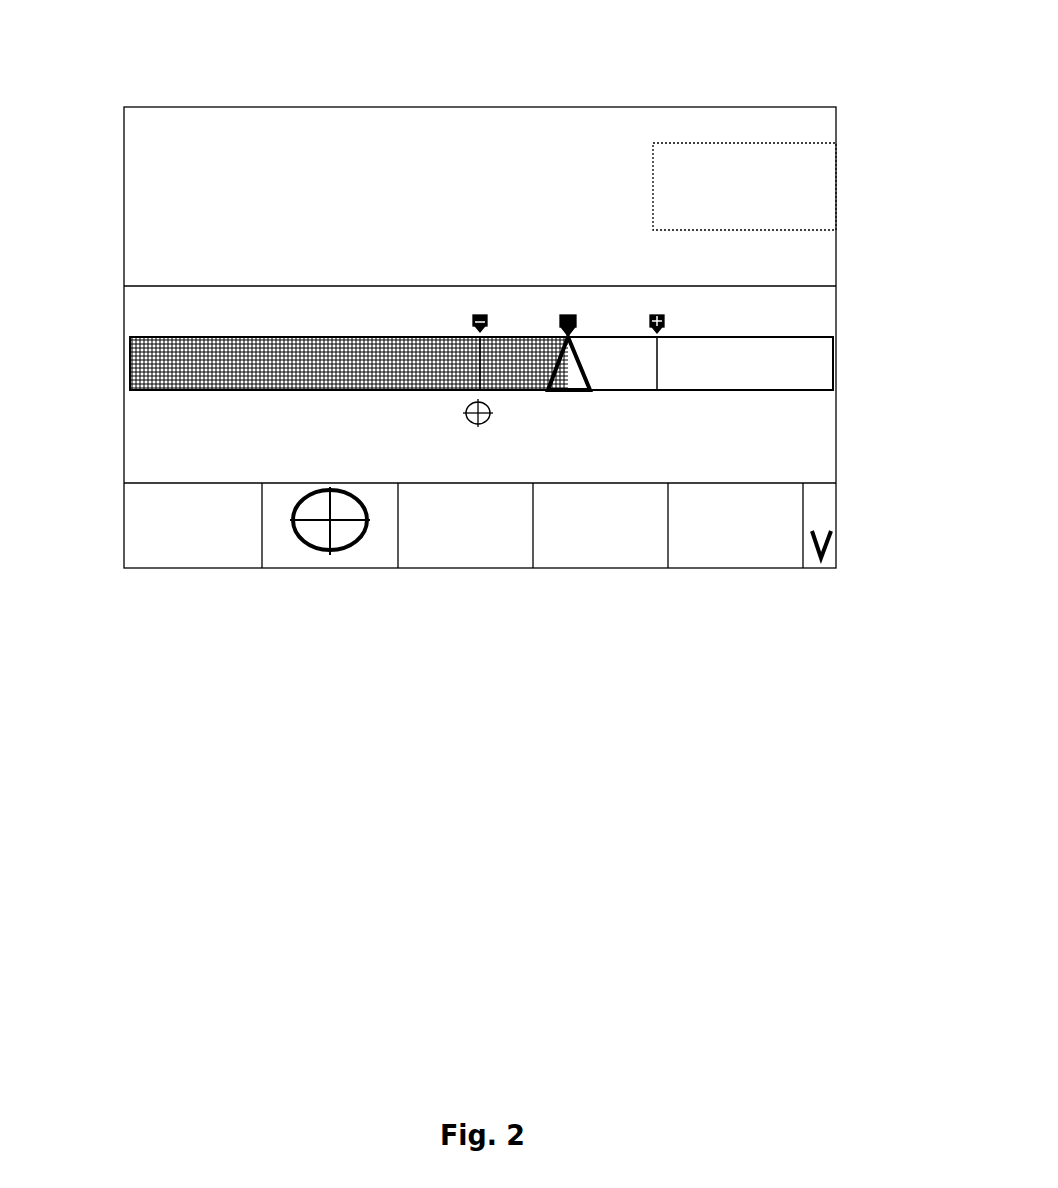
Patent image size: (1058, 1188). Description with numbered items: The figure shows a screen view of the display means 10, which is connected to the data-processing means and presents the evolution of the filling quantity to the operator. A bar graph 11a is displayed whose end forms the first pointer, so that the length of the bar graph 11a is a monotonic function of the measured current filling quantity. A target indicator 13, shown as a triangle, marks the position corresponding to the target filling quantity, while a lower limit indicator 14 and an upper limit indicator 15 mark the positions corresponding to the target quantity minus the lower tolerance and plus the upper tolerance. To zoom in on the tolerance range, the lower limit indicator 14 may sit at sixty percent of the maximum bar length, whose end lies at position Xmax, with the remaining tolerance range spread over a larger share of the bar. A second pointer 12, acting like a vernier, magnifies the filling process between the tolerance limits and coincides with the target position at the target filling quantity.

The display means 10 is at (480, 294).
The bar graph 11a is at (314, 407).
The second pointer 12 is at (666, 508).
The target indicator 13 is at (754, 311).
The lower limit indicator 14 is at (476, 316).
The upper limit indicator 15 is at (801, 350).
The maximum bar graph position Xmax is at (877, 424).